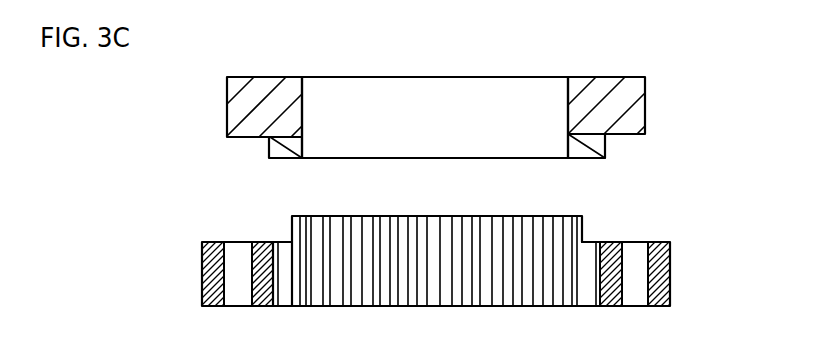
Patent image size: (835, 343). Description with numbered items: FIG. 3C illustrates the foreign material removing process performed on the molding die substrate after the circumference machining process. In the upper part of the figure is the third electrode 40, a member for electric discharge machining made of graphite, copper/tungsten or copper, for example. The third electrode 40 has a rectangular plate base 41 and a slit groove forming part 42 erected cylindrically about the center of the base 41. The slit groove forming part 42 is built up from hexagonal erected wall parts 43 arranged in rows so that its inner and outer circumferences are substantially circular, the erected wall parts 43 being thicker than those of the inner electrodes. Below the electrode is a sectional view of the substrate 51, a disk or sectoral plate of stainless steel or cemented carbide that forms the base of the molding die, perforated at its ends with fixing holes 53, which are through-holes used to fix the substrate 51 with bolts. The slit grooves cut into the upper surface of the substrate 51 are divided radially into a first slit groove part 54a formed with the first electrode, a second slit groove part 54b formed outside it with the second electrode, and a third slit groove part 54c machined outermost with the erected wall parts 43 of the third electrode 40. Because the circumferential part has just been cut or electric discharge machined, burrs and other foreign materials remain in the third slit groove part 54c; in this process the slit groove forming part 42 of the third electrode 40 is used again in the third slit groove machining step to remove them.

The third electrode 40 is at (582, 31).
The base 41 is at (267, 78).
The slit groove forming part 42 is at (578, 147).
The erected wall parts 43 is at (380, 137).
The substrate 51 is at (215, 242).
The fixing holes 53 is at (636, 262).
The first slit groove part 54a is at (420, 248).
The second slit groove part 54b is at (316, 248).
The third slit groove part 54c is at (280, 242).